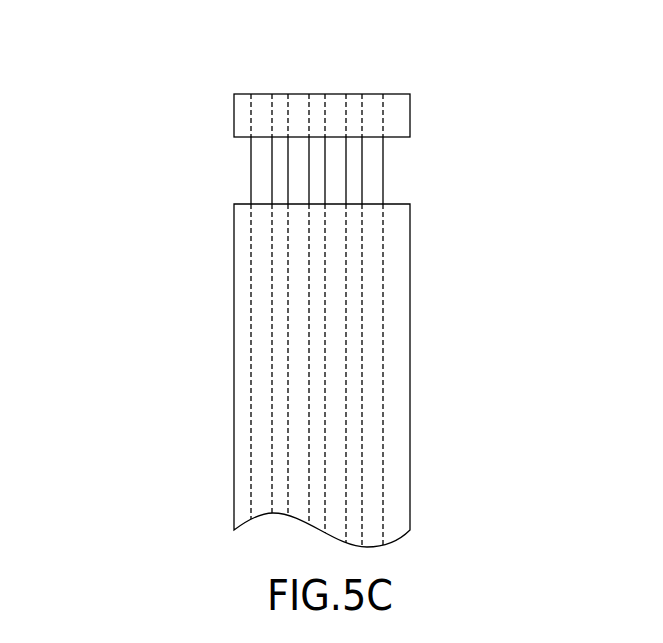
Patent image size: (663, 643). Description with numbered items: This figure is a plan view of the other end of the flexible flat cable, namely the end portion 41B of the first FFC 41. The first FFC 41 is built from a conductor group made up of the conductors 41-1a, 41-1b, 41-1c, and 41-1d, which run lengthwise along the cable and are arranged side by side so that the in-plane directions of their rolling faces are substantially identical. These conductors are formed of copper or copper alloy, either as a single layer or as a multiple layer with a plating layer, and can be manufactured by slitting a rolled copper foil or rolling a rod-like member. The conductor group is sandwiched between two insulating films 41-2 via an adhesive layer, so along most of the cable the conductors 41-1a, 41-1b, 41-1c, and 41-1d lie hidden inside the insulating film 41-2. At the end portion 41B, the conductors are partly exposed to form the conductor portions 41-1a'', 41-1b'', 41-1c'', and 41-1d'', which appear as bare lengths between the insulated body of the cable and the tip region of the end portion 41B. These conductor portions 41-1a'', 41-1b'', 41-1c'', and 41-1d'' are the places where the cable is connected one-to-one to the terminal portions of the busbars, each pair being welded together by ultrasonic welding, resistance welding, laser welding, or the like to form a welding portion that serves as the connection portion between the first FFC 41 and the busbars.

The first FFC 41 is at (310, 283).
The end portion 41B is at (422, 98).
The insulating film 41-2 is at (397, 413).
The conductor 41-1a is at (447, 375).
The conductor 41-1b is at (429, 373).
The conductor 41-1c is at (193, 364).
The conductor 41-1d is at (174, 361).
The conductor portion 41-1a'' is at (457, 175).
The conductor portion 41-1b'' is at (439, 170).
The conductor portion 41-1c'' is at (188, 170).
The conductor portion 41-1d'' is at (169, 166).